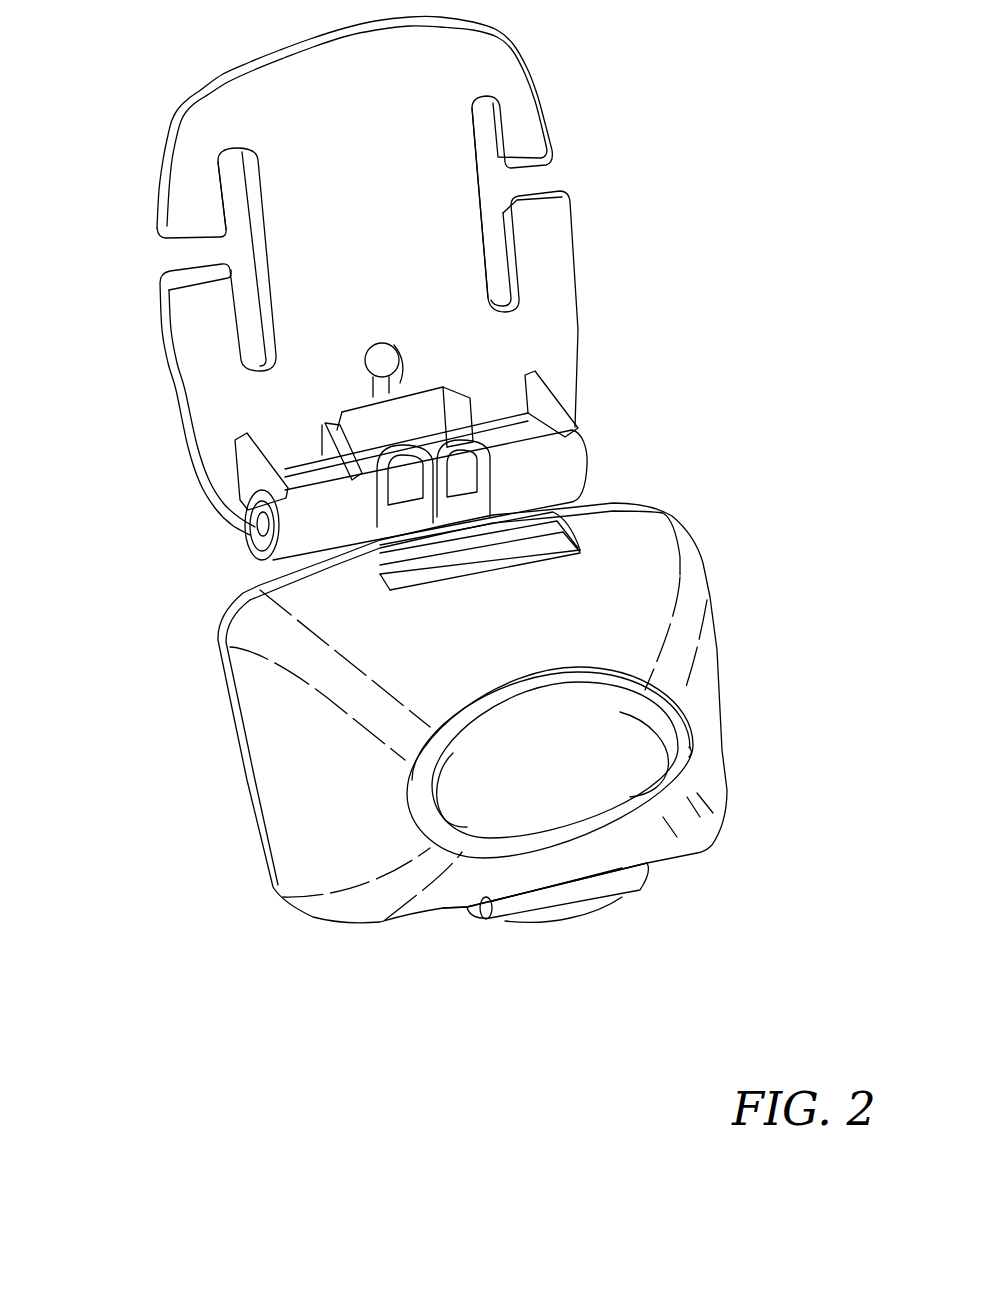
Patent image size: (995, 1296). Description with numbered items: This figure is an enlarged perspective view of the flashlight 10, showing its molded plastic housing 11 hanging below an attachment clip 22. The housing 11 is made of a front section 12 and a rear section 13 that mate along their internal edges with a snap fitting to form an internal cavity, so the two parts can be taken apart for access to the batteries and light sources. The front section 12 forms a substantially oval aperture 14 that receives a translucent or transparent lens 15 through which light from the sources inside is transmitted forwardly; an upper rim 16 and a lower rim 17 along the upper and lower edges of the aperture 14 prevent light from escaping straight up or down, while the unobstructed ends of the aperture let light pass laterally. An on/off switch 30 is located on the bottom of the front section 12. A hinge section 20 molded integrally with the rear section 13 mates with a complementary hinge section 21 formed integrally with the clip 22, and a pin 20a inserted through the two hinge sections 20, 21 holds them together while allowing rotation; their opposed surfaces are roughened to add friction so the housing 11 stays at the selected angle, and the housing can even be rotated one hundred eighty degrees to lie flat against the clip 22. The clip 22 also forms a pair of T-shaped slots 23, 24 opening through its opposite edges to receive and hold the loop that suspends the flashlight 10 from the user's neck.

The flashlight 10 is at (806, 301).
The housing 11 is at (712, 623).
The front section 12 is at (630, 540).
The rear section 13 is at (224, 702).
The oval aperture 14 is at (692, 752).
The lens 15 is at (537, 770).
The upper rim 16 is at (580, 668).
The lower rim 17 is at (653, 825).
The hinge section 20 is at (372, 476).
The pin 20a is at (256, 527).
The complementary hinge section 21 is at (567, 465).
The attachment clip 22 is at (583, 278).
The T-shaped slot 23 is at (150, 255).
The T-shaped slot 24 is at (560, 176).
The on/off switch 30 is at (567, 921).